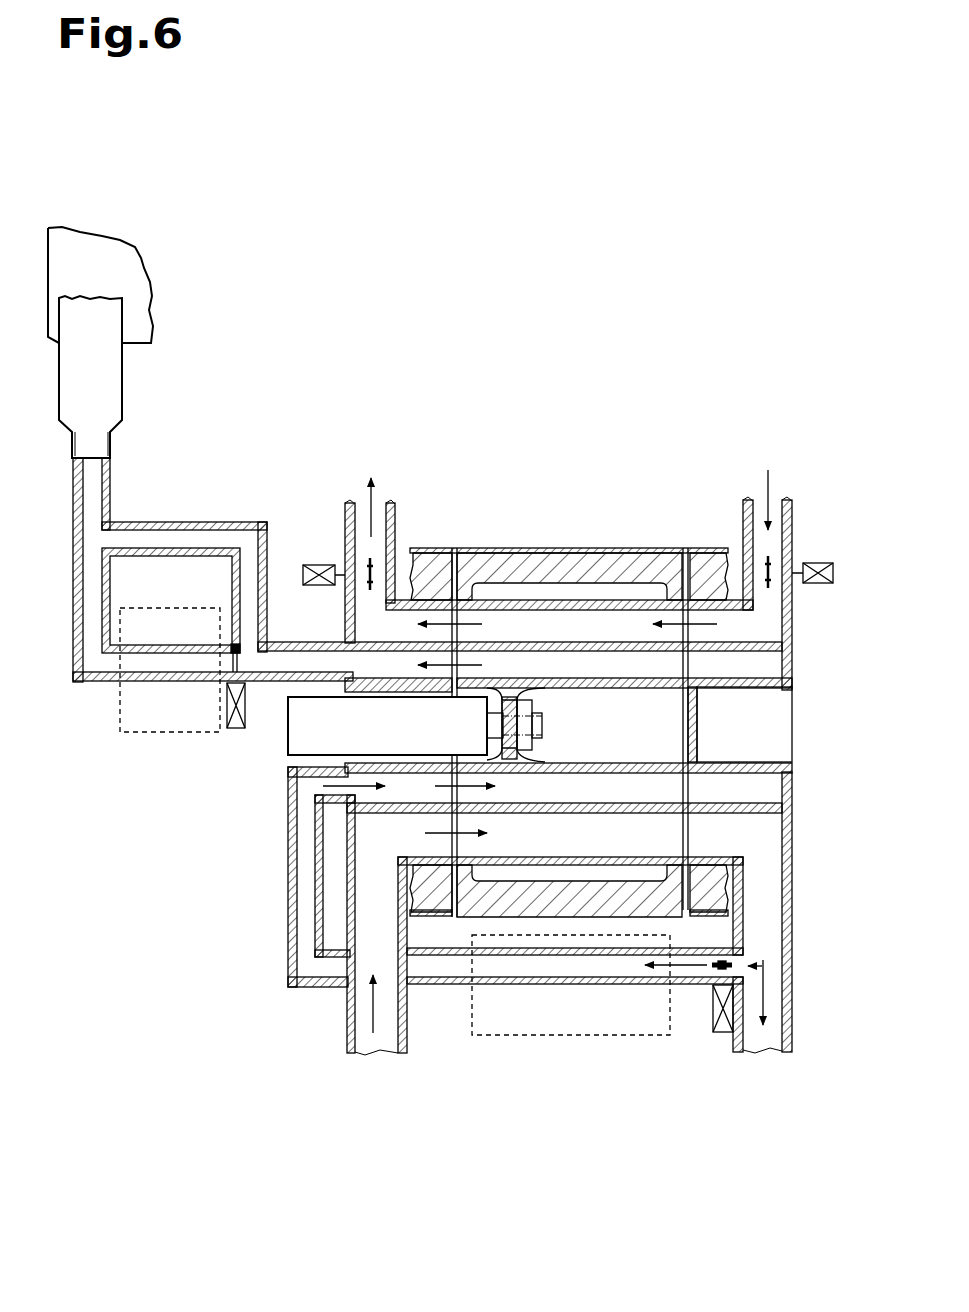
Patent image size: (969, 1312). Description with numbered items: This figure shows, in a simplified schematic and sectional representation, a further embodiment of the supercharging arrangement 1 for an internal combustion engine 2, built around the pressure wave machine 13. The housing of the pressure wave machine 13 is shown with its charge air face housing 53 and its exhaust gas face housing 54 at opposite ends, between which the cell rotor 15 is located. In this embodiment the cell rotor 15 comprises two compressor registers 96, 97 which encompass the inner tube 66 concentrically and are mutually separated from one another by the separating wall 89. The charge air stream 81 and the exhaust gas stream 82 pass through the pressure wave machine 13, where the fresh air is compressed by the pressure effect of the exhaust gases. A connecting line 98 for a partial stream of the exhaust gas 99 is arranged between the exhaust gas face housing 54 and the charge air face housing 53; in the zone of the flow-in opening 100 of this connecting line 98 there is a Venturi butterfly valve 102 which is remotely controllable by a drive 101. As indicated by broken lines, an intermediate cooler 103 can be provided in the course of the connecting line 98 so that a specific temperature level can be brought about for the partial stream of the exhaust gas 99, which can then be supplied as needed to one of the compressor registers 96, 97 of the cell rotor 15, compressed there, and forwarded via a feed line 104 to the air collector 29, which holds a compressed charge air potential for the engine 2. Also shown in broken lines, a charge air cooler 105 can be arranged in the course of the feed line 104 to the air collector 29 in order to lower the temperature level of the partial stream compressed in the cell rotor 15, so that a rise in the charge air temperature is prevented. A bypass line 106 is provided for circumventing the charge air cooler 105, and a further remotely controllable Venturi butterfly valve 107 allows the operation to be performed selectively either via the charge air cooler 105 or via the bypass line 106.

The supercharging arrangement 1 is at (445, 430).
The internal combustion engine 2 is at (100, 255).
The pressure wave machine 13 is at (595, 475).
The cell rotor 15 is at (662, 712).
The air collector 29 is at (112, 318).
The charge air face housing 53 is at (437, 565).
The exhaust gas face housing 54 is at (713, 565).
The inner tube 66 is at (630, 677).
The charge air stream 81 is at (366, 518).
The exhaust gas stream 82 is at (765, 487).
The separating wall 89 is at (487, 640).
The compressor register 96 is at (540, 620).
The compressor register 97 is at (573, 660).
The connecting line 98 is at (433, 1000).
The partial stream of the exhaust gas 99 is at (688, 970).
The flow-in opening 100 is at (762, 967).
The drive 101 is at (722, 1025).
The Venturi butterfly valve 102 is at (740, 958).
The intermediate cooler 103 is at (552, 1025).
The feed line 104 is at (299, 625).
The charge air cooler 105 is at (125, 714).
The bypass line 106 is at (148, 540).
The Venturi butterfly valve 107 is at (225, 668).